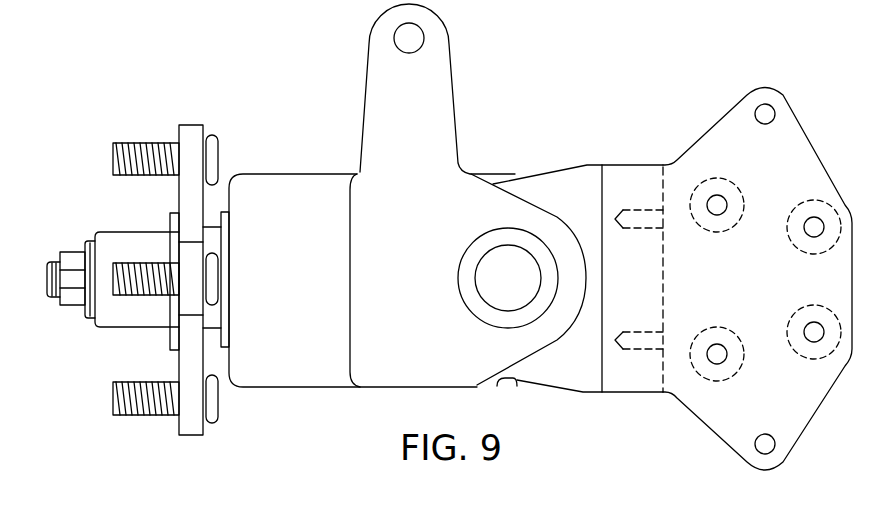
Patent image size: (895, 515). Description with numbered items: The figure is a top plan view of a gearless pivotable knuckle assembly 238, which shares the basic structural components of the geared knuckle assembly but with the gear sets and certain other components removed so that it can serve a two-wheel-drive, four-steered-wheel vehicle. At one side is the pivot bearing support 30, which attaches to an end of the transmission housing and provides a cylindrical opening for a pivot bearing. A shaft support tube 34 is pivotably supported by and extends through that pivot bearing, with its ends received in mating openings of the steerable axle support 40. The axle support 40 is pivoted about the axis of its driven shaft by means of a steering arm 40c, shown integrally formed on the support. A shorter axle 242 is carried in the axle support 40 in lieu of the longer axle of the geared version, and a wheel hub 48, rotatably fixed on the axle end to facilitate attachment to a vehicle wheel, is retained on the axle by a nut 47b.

The pivotable knuckle assembly 238 is at (600, 78).
The steerable axle support 40 is at (302, 291).
The steering arm 40c is at (365, 100).
The shaft support tube 34 is at (483, 247).
The pivot bearing support 30 is at (646, 292).
The wheel hub 48 is at (130, 232).
The nut 47b is at (73, 308).
The shorter axle 242 is at (47, 278).